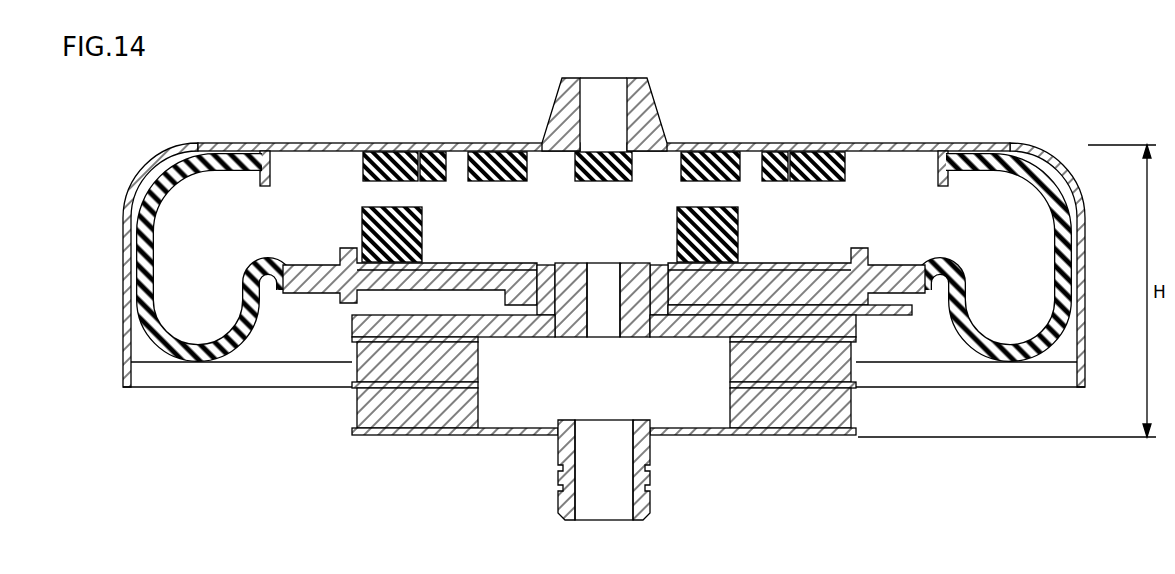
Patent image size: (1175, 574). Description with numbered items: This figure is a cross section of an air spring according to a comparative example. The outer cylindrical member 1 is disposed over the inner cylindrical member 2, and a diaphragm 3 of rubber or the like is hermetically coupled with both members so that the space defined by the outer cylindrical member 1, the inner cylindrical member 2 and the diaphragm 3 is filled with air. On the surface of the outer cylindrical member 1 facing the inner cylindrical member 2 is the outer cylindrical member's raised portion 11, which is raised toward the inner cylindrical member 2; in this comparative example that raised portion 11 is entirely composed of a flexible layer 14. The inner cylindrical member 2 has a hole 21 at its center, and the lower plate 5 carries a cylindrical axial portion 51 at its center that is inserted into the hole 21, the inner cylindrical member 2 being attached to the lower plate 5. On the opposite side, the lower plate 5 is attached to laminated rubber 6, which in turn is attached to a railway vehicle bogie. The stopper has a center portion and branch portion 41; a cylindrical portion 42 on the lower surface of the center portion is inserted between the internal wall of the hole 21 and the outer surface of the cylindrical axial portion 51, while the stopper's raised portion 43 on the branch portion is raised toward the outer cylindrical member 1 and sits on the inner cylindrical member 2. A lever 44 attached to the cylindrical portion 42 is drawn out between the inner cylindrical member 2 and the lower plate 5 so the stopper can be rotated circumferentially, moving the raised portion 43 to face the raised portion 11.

The outer cylindrical member 1 is at (496, 150).
The inner cylindrical member 2 is at (302, 298).
The diaphragm 3 is at (1003, 361).
The lower plate 5 is at (488, 326).
The laminated rubber 6 is at (777, 408).
The outer cylindrical member's raised portion 11 is at (812, 151).
The flexible layer 14 is at (740, 152).
The hole 21 is at (528, 297).
The center portion and branch portion of stopper 41 is at (463, 262).
The cylindrical portion 42 is at (657, 293).
The stopper's raised portion 43 is at (358, 232).
The lever 44 is at (806, 314).
The cylindrical axial portion 51 is at (633, 283).